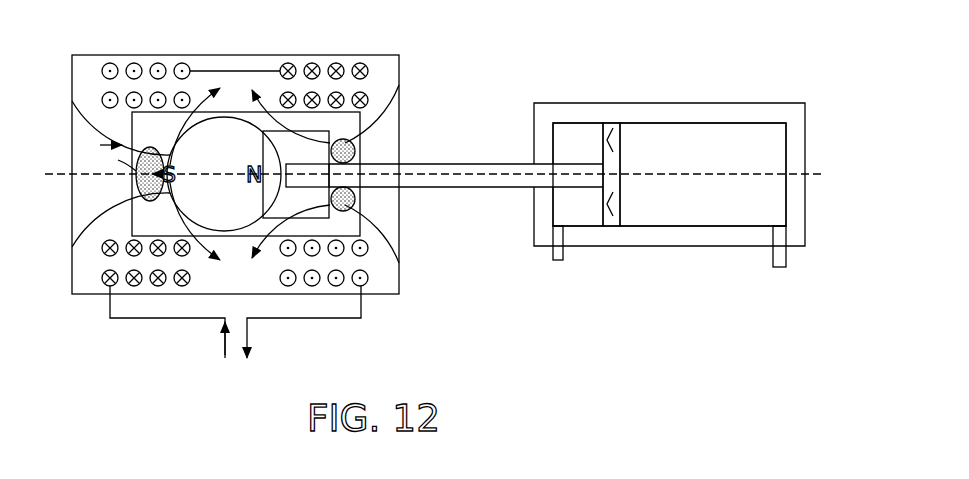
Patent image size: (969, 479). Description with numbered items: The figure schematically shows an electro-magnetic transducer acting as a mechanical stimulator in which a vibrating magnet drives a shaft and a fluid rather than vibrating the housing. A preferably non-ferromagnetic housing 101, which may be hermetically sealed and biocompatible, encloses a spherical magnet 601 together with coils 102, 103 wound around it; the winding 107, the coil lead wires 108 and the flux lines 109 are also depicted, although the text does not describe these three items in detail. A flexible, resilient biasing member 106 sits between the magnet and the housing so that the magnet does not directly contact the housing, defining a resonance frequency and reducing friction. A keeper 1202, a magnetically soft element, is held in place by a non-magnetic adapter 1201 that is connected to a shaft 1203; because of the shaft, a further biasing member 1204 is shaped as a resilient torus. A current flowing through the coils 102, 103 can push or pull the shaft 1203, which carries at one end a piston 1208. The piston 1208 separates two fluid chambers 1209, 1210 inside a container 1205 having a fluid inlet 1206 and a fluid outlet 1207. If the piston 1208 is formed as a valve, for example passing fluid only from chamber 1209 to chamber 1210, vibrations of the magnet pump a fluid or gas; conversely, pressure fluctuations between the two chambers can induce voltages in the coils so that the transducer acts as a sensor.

The housing 101 is at (92, 55).
The coil 102 is at (101, 100).
The coil 103 is at (368, 100).
The biasing member 106 is at (137, 185).
The coil winding wire 107 is at (240, 71).
The coil lead wires 108 is at (223, 346).
The magnetic flux lines 109 is at (78, 112).
The spherical magnet 601 is at (232, 232).
The non-magnetic adapter 1201 is at (293, 145).
The keeper 1202 is at (300, 175).
The shaft 1203 is at (495, 163).
The biasing member 1204 is at (357, 200).
The container 1205 is at (670, 103).
The fluid inlet 1206 is at (778, 268).
The fluid outlet 1207 is at (556, 250).
The piston 1208 is at (613, 228).
The fluid chamber 1209 is at (702, 210).
The fluid chamber 1210 is at (583, 216).